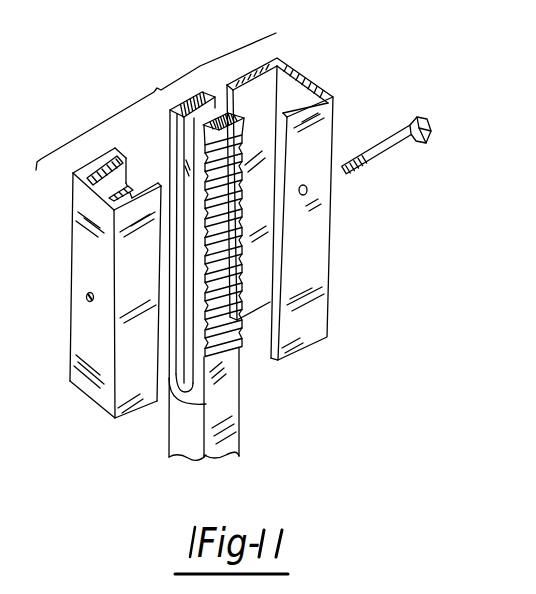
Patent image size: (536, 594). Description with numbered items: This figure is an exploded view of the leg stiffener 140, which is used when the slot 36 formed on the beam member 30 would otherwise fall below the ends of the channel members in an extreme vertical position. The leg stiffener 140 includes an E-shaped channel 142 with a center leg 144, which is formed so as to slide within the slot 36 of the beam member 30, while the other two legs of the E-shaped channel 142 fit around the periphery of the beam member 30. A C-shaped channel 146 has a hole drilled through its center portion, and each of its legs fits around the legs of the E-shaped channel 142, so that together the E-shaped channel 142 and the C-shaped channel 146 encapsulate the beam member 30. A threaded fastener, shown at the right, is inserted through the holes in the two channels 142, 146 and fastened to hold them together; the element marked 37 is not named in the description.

The beam member 30 is at (237, 444).
The slot 36 is at (168, 404).
The threaded portion end 37 is at (241, 334).
The leg stiffener 140 is at (68, 432).
The E-shaped channel 142 is at (146, 397).
The center leg 144 is at (135, 186).
The C-shaped channel 146 is at (332, 298).